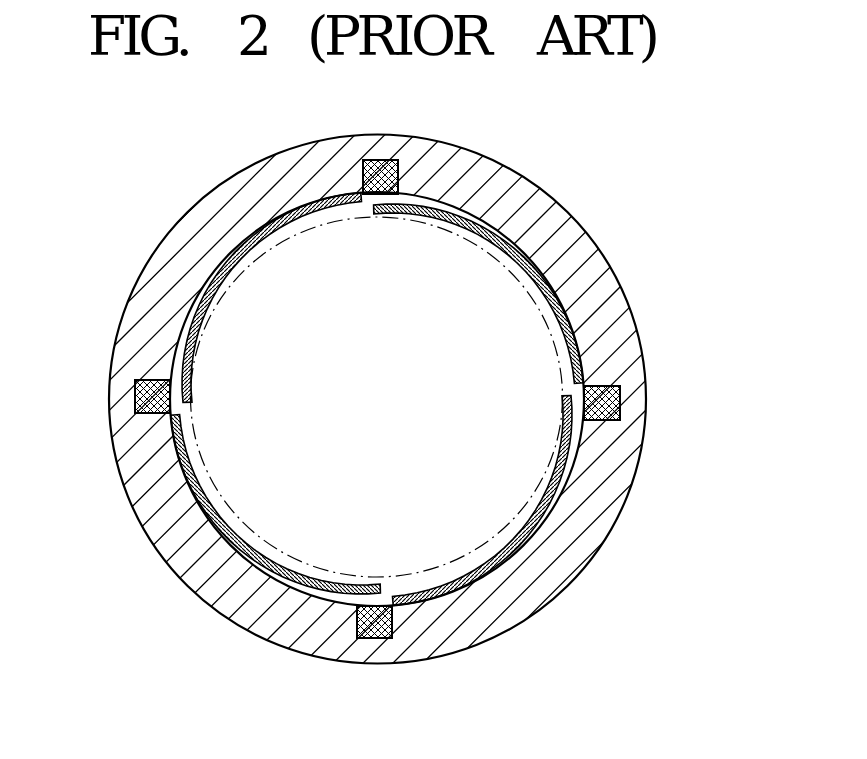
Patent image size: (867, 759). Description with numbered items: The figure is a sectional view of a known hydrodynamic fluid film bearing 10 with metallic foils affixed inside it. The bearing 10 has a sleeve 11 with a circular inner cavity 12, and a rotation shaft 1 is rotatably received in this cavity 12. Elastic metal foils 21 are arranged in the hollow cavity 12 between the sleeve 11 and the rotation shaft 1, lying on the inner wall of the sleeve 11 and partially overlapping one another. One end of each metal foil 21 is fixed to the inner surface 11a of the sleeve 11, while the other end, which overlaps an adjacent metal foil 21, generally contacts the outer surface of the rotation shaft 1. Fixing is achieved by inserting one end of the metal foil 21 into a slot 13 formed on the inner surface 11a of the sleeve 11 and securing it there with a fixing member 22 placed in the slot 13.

The hydrodynamic fluid film bearing 10 is at (433, 362).
The sleeve 11 is at (433, 350).
The inner surface 11a is at (519, 245).
The circular inner cavity 12 is at (558, 345).
The slot 13 is at (620, 390).
The rotation shaft 1 is at (200, 523).
The elastic metal foil 21 is at (513, 552).
The fixing member 22 is at (380, 638).